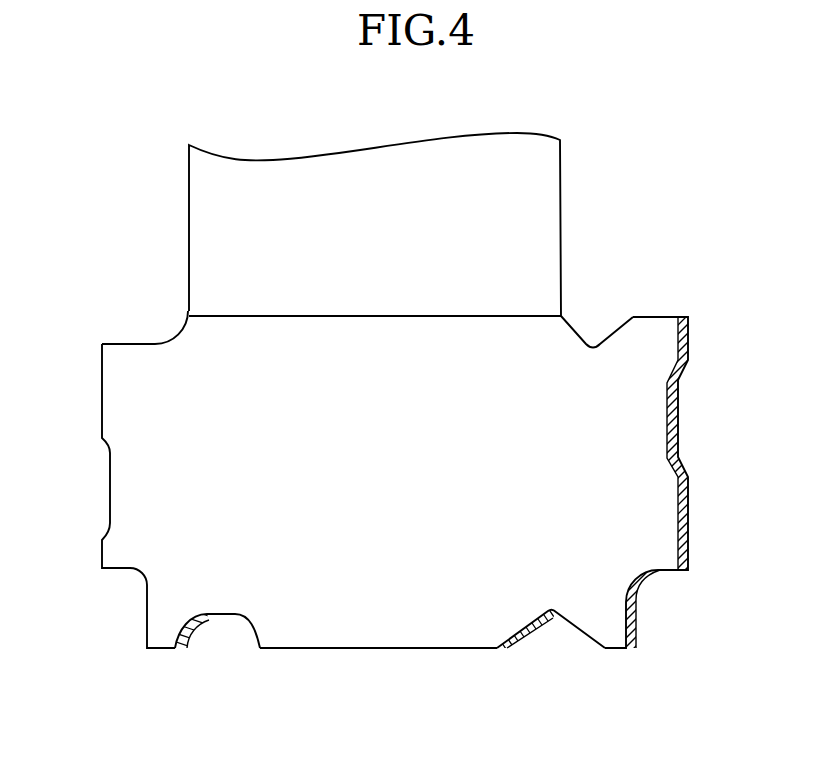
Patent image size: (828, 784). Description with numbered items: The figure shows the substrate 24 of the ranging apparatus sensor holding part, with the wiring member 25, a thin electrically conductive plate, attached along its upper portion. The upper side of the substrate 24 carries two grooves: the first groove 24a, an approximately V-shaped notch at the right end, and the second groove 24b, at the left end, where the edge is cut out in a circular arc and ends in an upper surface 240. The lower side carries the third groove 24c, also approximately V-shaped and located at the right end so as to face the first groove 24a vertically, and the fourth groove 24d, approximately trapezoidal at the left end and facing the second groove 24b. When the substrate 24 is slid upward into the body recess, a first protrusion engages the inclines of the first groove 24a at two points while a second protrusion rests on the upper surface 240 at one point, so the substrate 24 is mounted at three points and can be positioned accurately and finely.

The wiring member 25 is at (505, 127).
The substrate 24 is at (392, 652).
The first groove 24a is at (593, 336).
The second groove 24b is at (160, 330).
The third groove 24c is at (553, 626).
The fourth groove 24d is at (223, 620).
The upper surface 240 is at (132, 341).